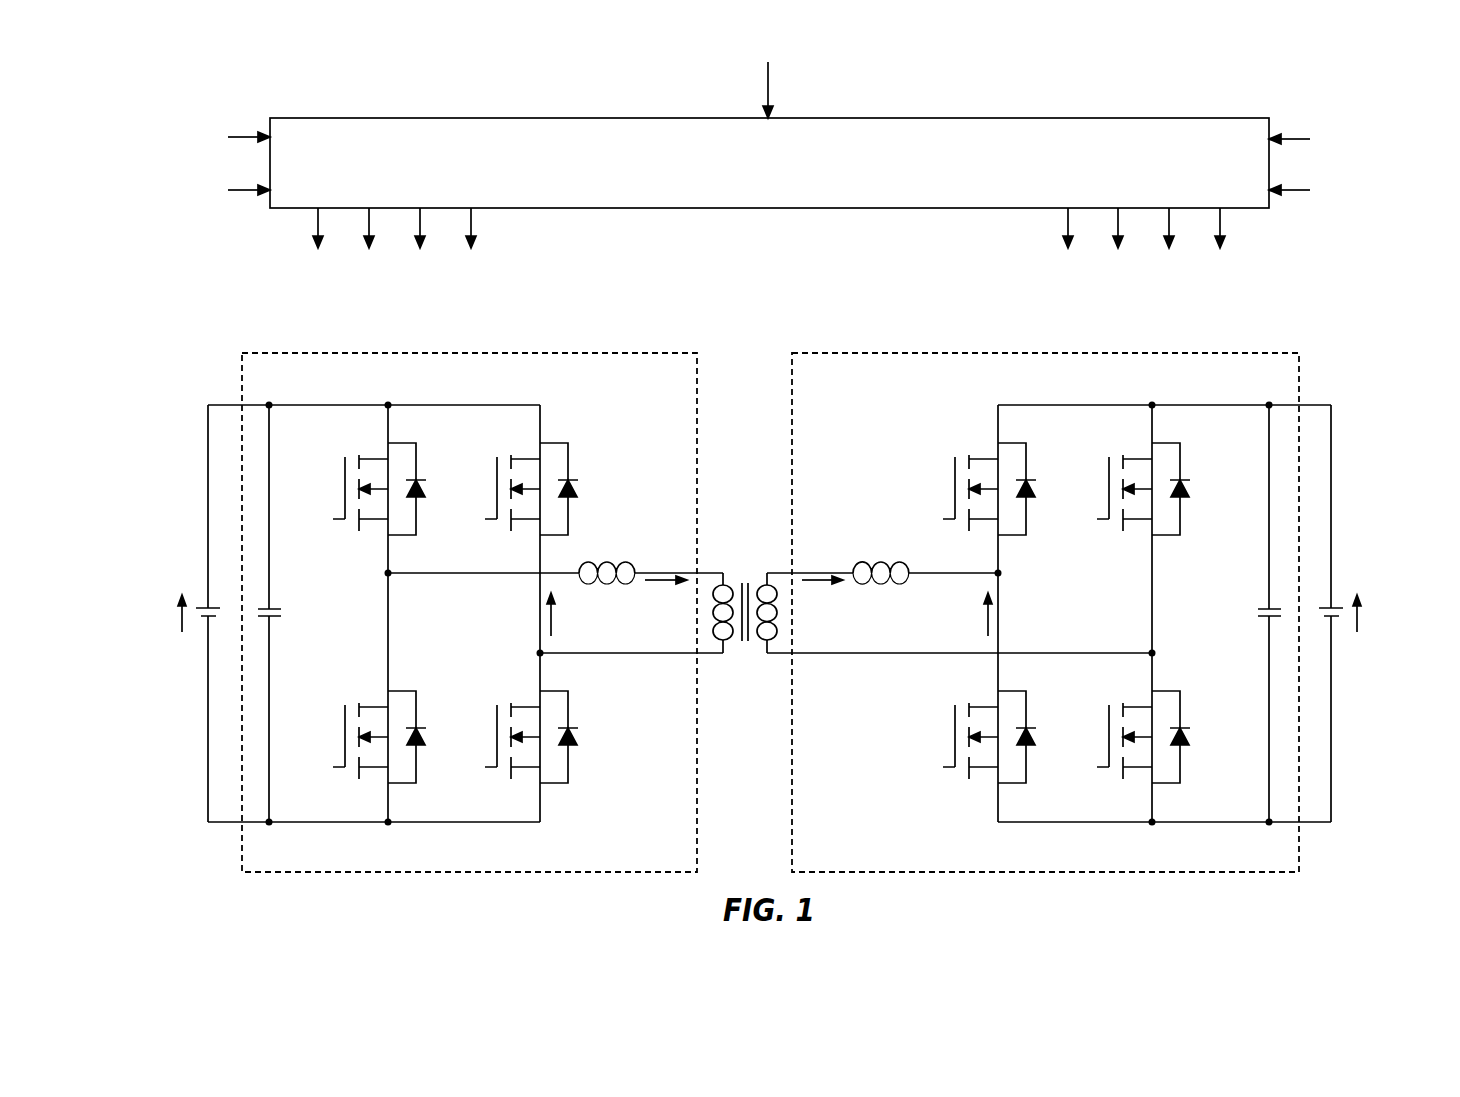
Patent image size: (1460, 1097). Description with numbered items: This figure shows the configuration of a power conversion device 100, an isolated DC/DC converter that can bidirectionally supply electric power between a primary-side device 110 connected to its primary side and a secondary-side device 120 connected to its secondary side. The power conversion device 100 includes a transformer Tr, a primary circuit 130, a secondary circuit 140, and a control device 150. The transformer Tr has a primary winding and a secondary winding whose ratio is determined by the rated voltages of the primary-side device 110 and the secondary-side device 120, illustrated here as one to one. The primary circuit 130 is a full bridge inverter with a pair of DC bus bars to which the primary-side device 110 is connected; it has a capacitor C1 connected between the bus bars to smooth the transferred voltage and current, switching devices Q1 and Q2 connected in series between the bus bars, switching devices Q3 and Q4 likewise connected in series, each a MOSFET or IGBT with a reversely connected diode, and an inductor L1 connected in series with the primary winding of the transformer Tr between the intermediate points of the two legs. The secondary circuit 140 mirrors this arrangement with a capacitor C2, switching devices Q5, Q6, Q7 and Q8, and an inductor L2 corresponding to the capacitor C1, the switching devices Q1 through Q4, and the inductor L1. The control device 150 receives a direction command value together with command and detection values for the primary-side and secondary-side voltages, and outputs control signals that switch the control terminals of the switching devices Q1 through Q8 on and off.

The power conversion device 100 is at (1268, 32).
The primary-side device 110 is at (205, 607).
The secondary-side device 120 is at (1335, 607).
The primary circuit 130 is at (630, 352).
The secondary circuit 140 is at (865, 352).
The control device 150 is at (773, 210).
The switching device Q1 is at (364, 482).
The switching device Q2 is at (364, 730).
The switching device Q3 is at (516, 482).
The switching device Q4 is at (516, 730).
The switching device Q5 is at (975, 482).
The switching device Q6 is at (975, 730).
The switching device Q7 is at (1128, 482).
The switching device Q8 is at (1128, 730).
The capacitor C1 is at (286, 613).
The capacitor C2 is at (1252, 613).
The inductor L1 is at (607, 559).
The inductor L2 is at (881, 559).
The transformer Tr is at (745, 630).